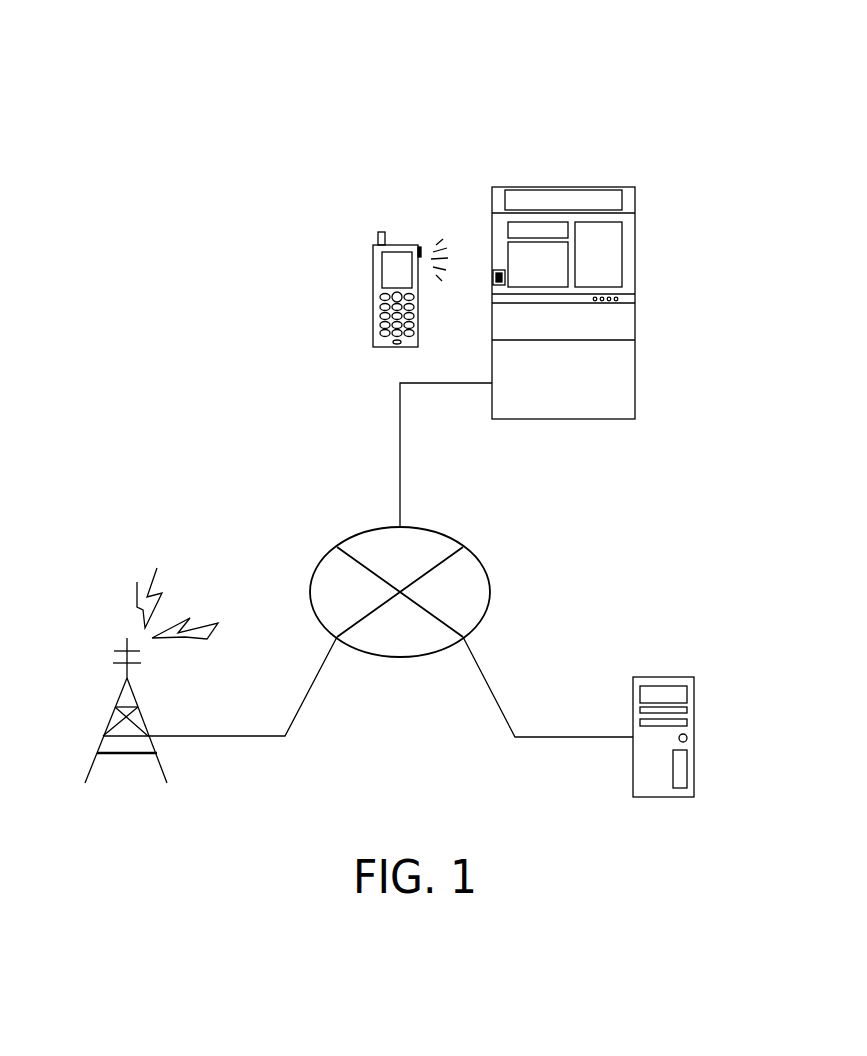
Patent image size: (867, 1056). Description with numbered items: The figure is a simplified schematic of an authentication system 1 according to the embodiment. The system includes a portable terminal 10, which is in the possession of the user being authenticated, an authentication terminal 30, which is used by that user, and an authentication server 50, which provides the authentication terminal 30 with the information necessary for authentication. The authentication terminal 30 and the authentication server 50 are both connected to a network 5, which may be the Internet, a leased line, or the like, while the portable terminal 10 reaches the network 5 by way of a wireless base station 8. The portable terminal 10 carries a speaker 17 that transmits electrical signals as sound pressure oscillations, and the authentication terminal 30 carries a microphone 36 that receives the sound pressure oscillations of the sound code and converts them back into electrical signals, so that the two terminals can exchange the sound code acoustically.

The authentication system 1 is at (450, 117).
The network 5 is at (415, 657).
The wireless base station 8 is at (90, 762).
The portable terminal 10 is at (373, 311).
The speaker 17 is at (421, 250).
The authentication terminal 30 is at (636, 260).
The microphone 36 is at (493, 283).
The authentication server 50 is at (694, 745).